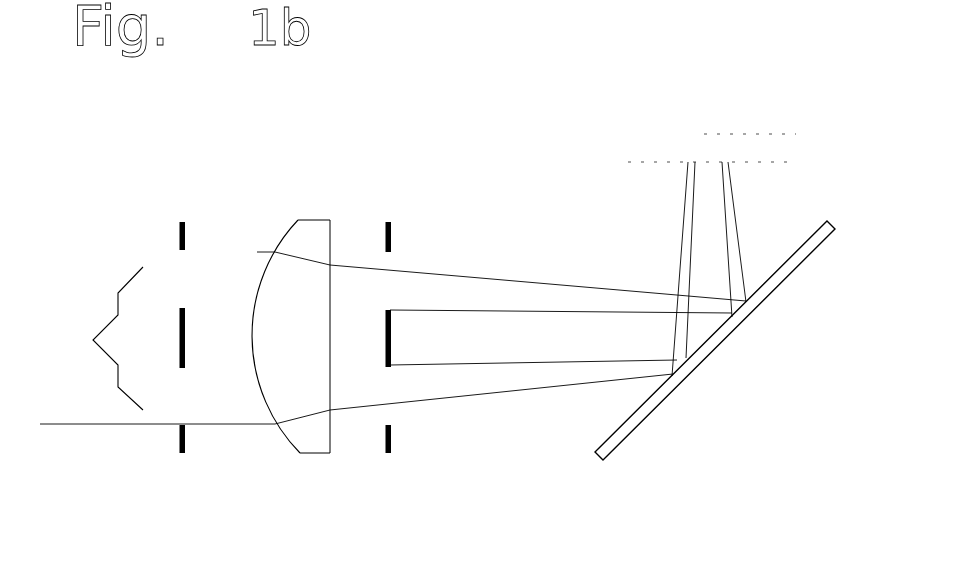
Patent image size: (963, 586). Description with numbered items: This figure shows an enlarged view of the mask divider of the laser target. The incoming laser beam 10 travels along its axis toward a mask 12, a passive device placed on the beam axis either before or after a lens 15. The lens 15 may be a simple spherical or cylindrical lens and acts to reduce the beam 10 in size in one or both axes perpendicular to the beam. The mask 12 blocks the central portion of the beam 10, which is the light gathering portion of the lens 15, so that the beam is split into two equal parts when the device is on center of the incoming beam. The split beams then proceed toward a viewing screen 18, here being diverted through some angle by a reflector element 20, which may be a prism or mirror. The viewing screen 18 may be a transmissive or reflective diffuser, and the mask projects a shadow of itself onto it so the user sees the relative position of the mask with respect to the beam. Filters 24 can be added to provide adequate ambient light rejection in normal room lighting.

The incoming laser beam 10 is at (155, 345).
The mask 12 is at (380, 460).
The lens 15 is at (315, 215).
The viewing screen 18 is at (617, 178).
The reflector element 20 is at (652, 423).
The filters 24 is at (622, 122).